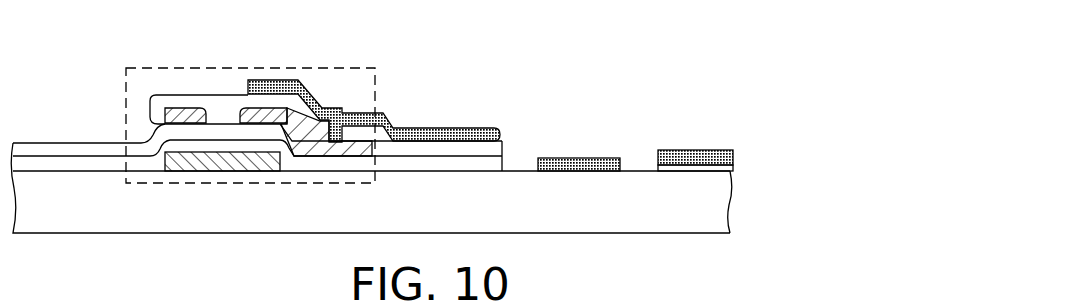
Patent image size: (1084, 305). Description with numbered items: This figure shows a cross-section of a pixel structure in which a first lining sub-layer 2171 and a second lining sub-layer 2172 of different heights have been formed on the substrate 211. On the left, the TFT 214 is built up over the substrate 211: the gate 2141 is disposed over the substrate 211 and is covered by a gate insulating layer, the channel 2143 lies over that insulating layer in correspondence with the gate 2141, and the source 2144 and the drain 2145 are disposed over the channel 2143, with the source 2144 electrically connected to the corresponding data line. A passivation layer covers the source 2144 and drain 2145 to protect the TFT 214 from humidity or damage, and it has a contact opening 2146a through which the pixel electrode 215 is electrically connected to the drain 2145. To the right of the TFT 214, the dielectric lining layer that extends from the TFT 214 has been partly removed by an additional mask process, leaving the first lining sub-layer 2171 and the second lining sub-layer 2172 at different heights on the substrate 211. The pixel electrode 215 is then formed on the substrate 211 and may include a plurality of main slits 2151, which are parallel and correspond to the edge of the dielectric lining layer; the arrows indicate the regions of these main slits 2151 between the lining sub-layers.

The substrate 211 is at (733, 198).
The TFT 214 is at (237, 185).
The gate 2141 is at (153, 163).
The channel 2143 is at (152, 138).
The source 2144 is at (150, 100).
The drain 2145 is at (283, 108).
The contact opening 2146a is at (343, 113).
The pixel electrode 215 is at (505, 138).
The main slits 2151 is at (638, 181).
The first lining sub-layer 2171 is at (510, 155).
The second lining sub-layer 2172 is at (735, 165).